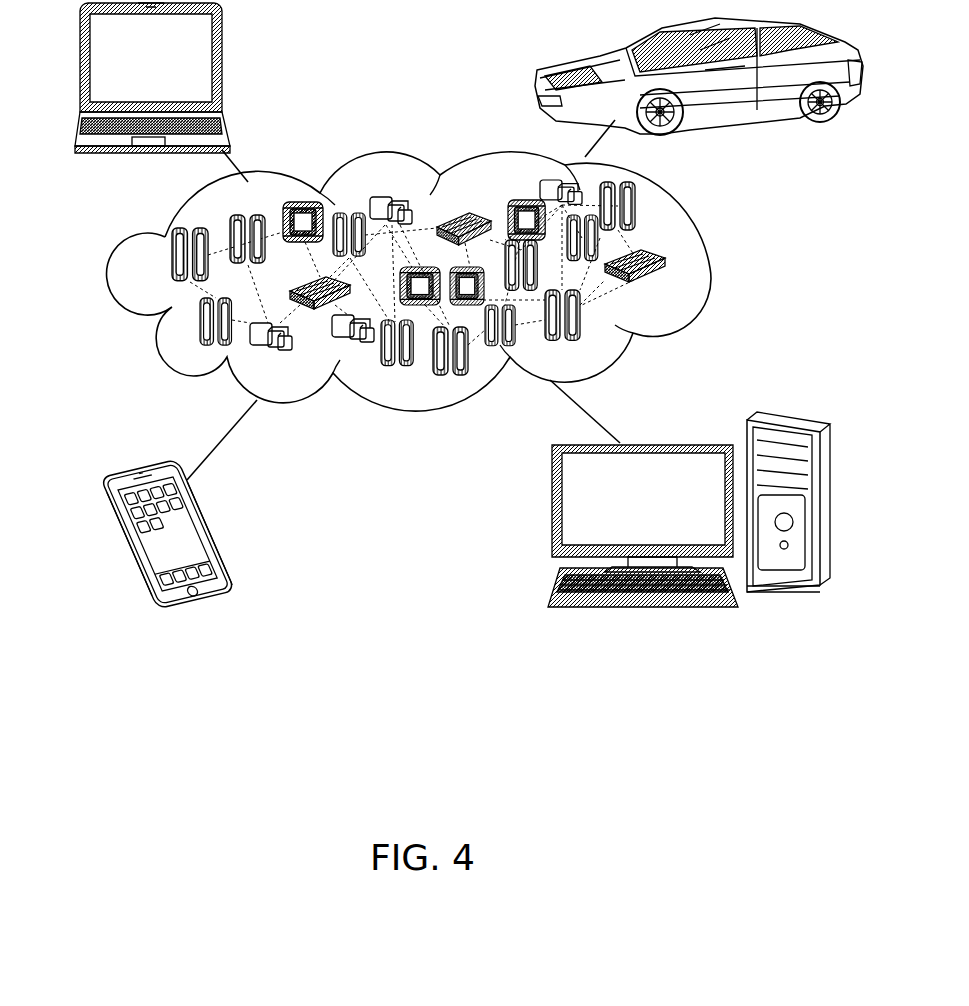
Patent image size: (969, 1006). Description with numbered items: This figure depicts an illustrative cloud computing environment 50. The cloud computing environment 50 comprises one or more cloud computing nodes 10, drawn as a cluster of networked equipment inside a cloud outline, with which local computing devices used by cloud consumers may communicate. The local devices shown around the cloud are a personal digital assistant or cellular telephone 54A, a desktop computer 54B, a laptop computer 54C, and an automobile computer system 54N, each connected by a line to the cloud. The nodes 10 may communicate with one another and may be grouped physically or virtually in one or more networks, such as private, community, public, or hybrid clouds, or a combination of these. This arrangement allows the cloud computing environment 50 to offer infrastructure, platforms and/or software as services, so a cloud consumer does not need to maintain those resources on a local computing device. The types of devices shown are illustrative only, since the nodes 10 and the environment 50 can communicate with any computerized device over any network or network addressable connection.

The cloud computing node 10 is at (660, 276).
The cloud computing environment 50 is at (710, 268).
The personal digital assistant or cellular telephone 54A is at (197, 526).
The desktop computer 54B is at (693, 442).
The laptop computer 54C is at (203, 76).
The automobile computer system 54N is at (538, 84).